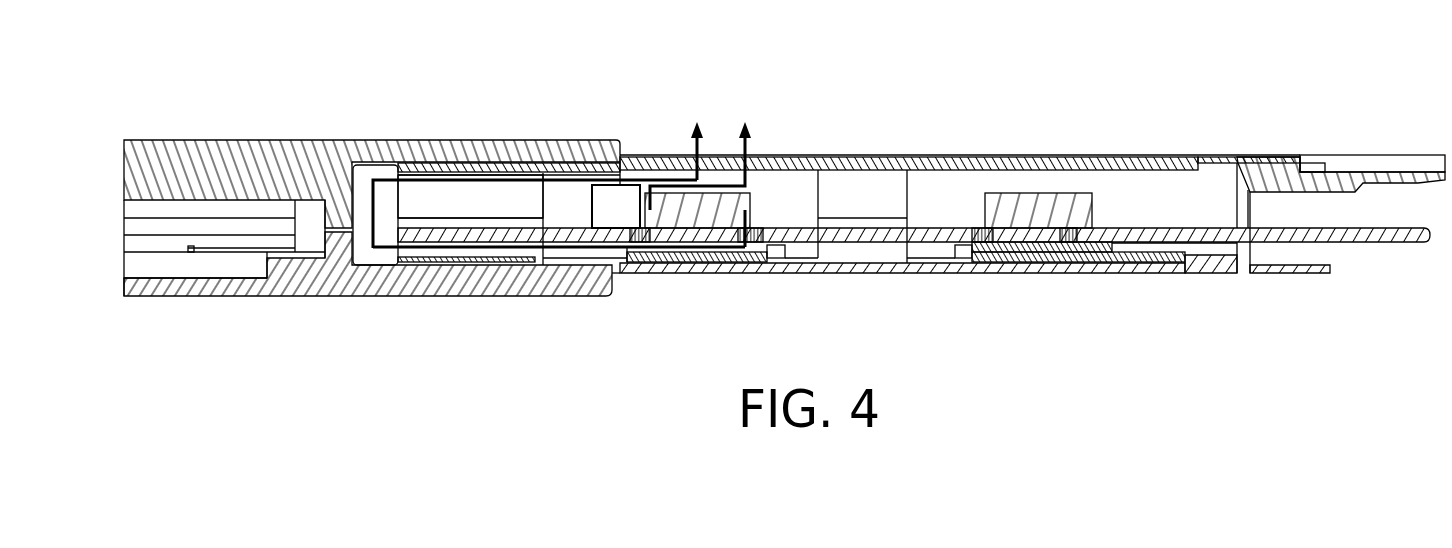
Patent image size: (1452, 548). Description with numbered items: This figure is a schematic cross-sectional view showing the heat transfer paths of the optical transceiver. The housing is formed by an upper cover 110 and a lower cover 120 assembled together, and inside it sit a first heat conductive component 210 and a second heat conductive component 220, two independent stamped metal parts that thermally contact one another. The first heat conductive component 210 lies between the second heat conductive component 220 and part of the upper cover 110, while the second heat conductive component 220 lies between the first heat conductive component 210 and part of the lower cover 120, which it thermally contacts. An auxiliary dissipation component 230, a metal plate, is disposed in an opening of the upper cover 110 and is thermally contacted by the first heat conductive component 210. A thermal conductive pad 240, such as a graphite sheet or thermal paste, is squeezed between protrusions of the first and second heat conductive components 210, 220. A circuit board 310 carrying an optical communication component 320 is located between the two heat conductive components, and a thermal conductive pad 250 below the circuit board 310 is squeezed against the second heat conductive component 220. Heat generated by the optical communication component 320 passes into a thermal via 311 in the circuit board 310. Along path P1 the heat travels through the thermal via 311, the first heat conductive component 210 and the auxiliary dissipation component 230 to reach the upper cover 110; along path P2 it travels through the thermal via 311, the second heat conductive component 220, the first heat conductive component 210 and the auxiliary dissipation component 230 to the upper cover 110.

The upper cover 110 is at (160, 160).
The lower cover 120 is at (372, 283).
The first heat conductive component 210 is at (467, 192).
The second heat conductive component 220 is at (522, 262).
The auxiliary dissipation component 230 is at (1197, 156).
The thermal conductive pad 240 is at (505, 215).
The thermal conductive pad 250 is at (768, 247).
The circuit board 310 is at (790, 232).
The thermal via 311 is at (745, 233).
The optical communication component 320 is at (708, 207).
The heat transfer path P1 is at (704, 172).
The heat transfer path P2 is at (696, 139).